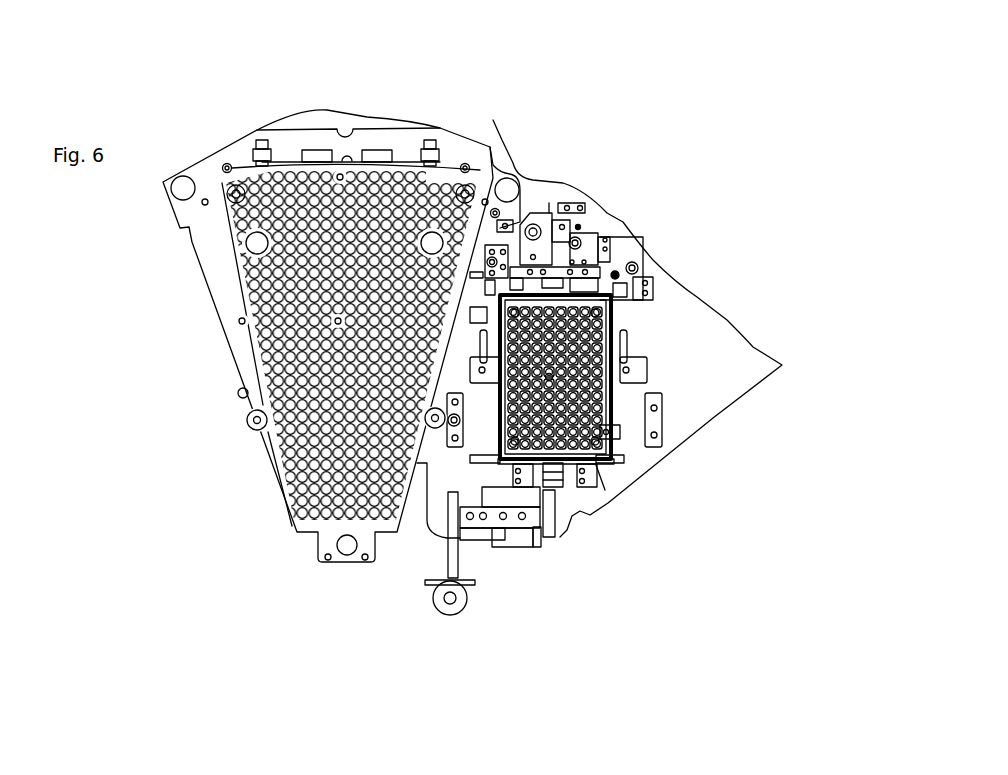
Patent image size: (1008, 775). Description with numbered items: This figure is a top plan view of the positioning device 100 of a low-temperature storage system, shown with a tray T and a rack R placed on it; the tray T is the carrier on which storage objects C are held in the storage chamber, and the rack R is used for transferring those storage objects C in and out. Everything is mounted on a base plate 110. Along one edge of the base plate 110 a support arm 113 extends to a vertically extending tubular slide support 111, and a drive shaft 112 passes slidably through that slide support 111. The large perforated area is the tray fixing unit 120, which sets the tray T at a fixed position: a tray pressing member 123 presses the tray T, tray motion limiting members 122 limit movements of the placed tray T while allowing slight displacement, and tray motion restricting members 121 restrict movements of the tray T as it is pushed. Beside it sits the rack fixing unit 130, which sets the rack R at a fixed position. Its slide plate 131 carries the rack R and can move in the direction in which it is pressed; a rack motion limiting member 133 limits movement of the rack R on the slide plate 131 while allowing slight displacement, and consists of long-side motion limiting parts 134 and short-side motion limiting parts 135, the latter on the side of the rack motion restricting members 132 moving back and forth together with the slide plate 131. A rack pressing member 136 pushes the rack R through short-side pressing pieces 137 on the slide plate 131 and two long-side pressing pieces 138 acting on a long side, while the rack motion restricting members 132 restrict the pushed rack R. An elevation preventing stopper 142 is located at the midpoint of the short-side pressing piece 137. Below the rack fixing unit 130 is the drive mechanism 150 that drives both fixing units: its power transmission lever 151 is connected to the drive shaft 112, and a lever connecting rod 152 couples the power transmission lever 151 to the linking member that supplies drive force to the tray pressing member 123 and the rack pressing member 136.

The positioning device 100 is at (120, 111).
The base plate 110 is at (600, 207).
The slide support 111 is at (430, 612).
The drive shaft 112 is at (443, 613).
The support arm 113 is at (450, 542).
The tray fixing unit 120 is at (161, 274).
The tray motion restricting members 121 is at (227, 170).
The tray motion limiting members 122 is at (180, 186).
The tray pressing member 123 is at (268, 143).
The rack fixing unit 130 is at (678, 166).
The slide plate 131 is at (627, 363).
The rack motion restricting members 132 is at (483, 273).
The rack motion limiting member 133 is at (500, 304).
The long-side motion limiting parts 134 is at (593, 260).
The short-side motion limiting parts 135 is at (525, 225).
The rack pressing member 136 is at (500, 430).
The short-side pressing pieces 137 is at (600, 483).
The long-side pressing pieces 138 is at (627, 289).
The elevation preventing stopper 142 is at (549, 203).
The drive mechanism 150 is at (593, 627).
The power transmission lever 151 is at (490, 547).
The lever connecting rod 152 is at (517, 537).
The tray T is at (230, 293).
The storage objects C is at (483, 312).
The rack R is at (450, 357).